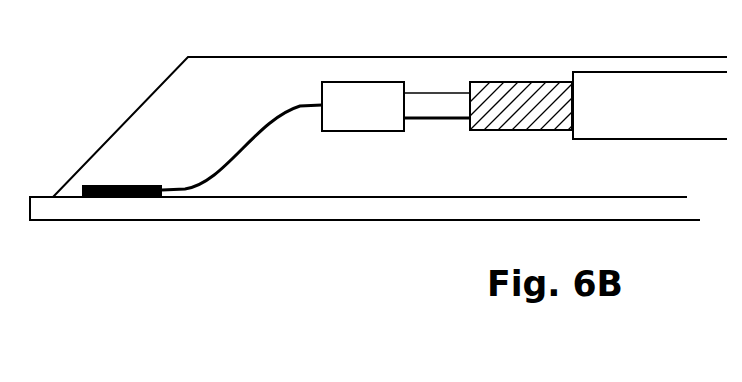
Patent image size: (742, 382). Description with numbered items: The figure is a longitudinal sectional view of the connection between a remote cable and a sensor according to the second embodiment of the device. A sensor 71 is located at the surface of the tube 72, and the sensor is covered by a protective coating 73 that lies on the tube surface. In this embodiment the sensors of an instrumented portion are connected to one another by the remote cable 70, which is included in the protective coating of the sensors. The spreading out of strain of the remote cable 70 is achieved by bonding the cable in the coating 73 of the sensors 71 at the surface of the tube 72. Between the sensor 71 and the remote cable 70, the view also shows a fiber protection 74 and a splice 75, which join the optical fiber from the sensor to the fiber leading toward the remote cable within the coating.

The remote cable 70 is at (730, 152).
The sensor 71 is at (98, 197).
The tube 72 is at (285, 208).
The coating 73 is at (210, 92).
The fiber protection 74 is at (563, 140).
The splice 75 is at (404, 140).